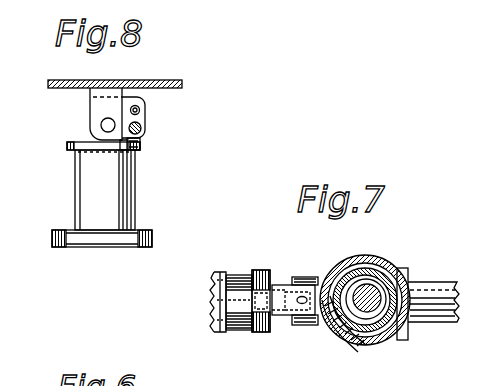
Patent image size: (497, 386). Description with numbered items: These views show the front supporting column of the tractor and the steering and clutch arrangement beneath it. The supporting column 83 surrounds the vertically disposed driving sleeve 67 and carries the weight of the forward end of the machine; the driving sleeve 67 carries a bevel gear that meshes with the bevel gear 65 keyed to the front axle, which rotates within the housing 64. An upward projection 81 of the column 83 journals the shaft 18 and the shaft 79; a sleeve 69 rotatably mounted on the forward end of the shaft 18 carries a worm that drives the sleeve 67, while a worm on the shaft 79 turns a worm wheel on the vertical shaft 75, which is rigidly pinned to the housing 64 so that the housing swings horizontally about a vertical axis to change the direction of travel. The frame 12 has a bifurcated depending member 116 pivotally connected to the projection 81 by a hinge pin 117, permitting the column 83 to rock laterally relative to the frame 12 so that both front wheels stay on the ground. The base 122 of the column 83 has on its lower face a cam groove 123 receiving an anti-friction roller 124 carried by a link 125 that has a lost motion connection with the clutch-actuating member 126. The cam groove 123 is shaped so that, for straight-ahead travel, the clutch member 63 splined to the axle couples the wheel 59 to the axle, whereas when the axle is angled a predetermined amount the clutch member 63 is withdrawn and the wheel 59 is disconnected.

In FIG. 8, the frame 12 is at (171, 80).
In FIG. 8, the bifurcated depending member 116 is at (93, 97).
In FIG. 8, the hinge pin 117 is at (104, 125).
In FIG. 8, the shaft 79 is at (140, 110).
In FIG. 8, the shaft 18 is at (142, 129).
In FIG. 8, the sleeve 69 is at (140, 139).
In FIG. 8, the upward projection 81 is at (138, 147).
In FIG. 8, the supporting column 83 is at (82, 190).
In FIG. 7, the supporting column 83 is at (401, 340).
In FIG. 8, the base 122 is at (50, 236).
In FIG. 7, the anti-friction roller 124 is at (320, 283).
In FIG. 7, the cam groove 123 is at (347, 273).
In FIG. 7, the vertical shaft 75 is at (386, 282).
In FIG. 7, the housing 64 is at (437, 290).
In FIG. 7, the wheel 59 is at (212, 303).
In FIG. 7, the clutch member 63 is at (241, 330).
In FIG. 7, the clutch-actuating member 126 is at (266, 331).
In FIG. 7, the bevel gear 65 is at (308, 327).
In FIG. 7, the link 125 is at (323, 331).
In FIG. 7, the driving sleeve 67 is at (370, 333).